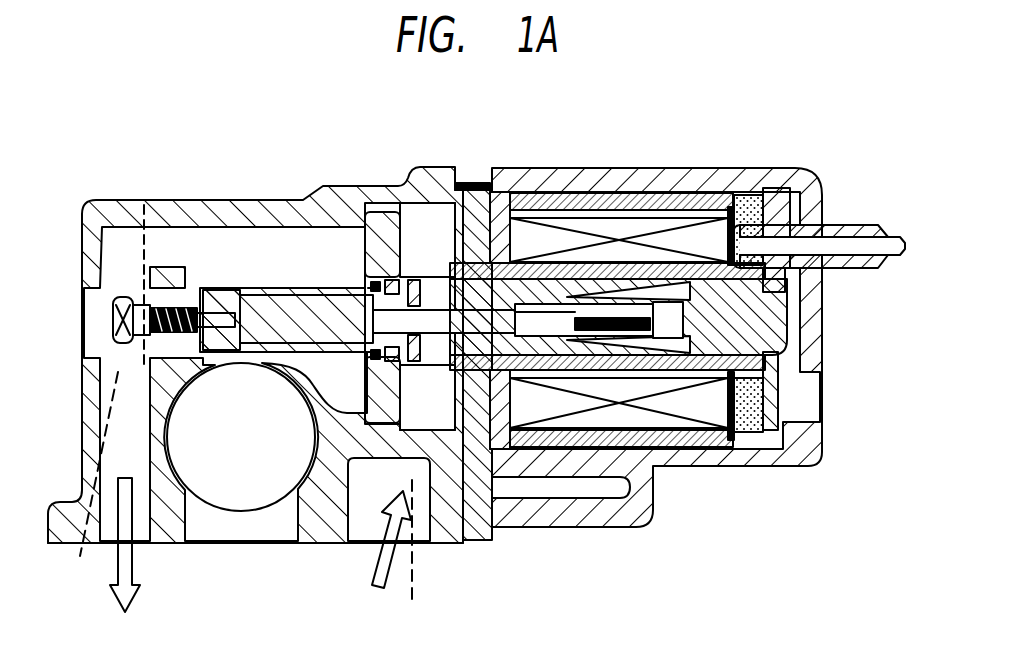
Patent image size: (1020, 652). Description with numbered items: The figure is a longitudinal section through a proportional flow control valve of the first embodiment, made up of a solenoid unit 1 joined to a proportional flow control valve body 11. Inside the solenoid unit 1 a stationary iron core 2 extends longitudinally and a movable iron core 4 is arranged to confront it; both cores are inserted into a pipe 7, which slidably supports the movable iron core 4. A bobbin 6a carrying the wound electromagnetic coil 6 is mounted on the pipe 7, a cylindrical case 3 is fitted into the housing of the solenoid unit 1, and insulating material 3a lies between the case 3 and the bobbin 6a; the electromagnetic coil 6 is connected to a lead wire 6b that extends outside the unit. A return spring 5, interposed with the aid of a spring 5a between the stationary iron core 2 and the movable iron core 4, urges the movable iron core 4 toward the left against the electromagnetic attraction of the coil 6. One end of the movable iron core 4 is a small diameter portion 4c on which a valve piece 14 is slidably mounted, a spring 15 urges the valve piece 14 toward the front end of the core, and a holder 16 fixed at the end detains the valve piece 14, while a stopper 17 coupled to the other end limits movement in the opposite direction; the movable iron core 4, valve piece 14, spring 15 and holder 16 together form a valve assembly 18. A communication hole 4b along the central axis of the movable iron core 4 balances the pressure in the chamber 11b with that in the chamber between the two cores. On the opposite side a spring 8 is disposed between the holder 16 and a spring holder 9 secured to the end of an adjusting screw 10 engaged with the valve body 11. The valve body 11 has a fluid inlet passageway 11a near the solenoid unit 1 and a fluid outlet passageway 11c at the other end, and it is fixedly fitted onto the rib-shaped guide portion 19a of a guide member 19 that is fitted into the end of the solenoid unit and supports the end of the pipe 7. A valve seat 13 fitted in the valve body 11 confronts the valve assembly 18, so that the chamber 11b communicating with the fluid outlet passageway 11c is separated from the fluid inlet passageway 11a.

The solenoid unit 1 is at (680, 180).
The stationary iron core 2 is at (780, 316).
The cylindrical case 3 is at (712, 200).
The insulating material 3a is at (763, 195).
The movable iron core 4 is at (474, 542).
The communication hole 4b is at (508, 500).
The small diameter portion 4c is at (441, 450).
The return spring 5 is at (566, 430).
The spring 5a is at (692, 380).
The electromagnetic coil 6 is at (597, 440).
The bobbin 6a is at (771, 432).
The lead wire 6b is at (846, 240).
The pipe 7 is at (731, 378).
The spring 8 is at (250, 293).
The spring holder 9 is at (212, 288).
The adjusting screw 10 is at (152, 295).
The proportional flow control valve body 11 is at (178, 201).
The fluid inlet passageway 11a is at (397, 556).
The chamber 11b is at (288, 228).
The fluid outlet passageway 11c is at (104, 492).
The valve seat 13 is at (396, 226).
The valve piece 14 is at (440, 240).
The spring 15 is at (458, 182).
The holder 16 is at (372, 210).
The stopper 17 is at (549, 265).
The valve assembly 18 is at (362, 318).
The guide member 19 is at (486, 210).
The rib-shaped guide portion 19a is at (469, 205).